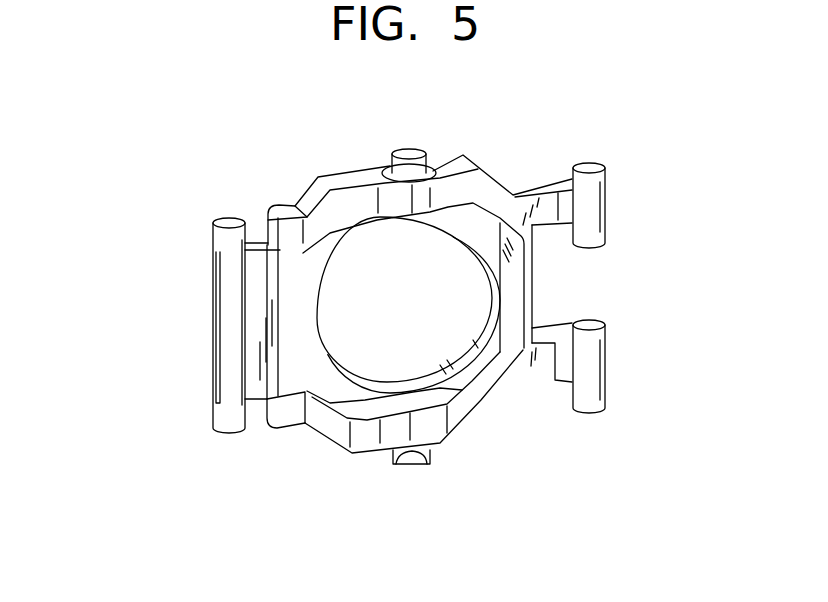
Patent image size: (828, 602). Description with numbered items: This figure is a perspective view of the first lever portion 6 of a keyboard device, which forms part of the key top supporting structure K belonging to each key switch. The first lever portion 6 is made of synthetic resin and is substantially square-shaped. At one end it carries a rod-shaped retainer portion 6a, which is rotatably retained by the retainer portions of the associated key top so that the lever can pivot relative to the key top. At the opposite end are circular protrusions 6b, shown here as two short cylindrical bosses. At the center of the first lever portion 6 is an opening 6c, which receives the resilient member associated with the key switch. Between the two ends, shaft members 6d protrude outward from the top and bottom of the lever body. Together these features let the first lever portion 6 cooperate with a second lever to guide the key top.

The first lever portion 6 is at (352, 168).
The rod-shaped retainer portion 6a is at (232, 328).
The circular protrusions 6b is at (593, 247).
The opening 6c is at (452, 288).
The shaft members 6d is at (412, 152).
The key top supporting structure K is at (232, 461).